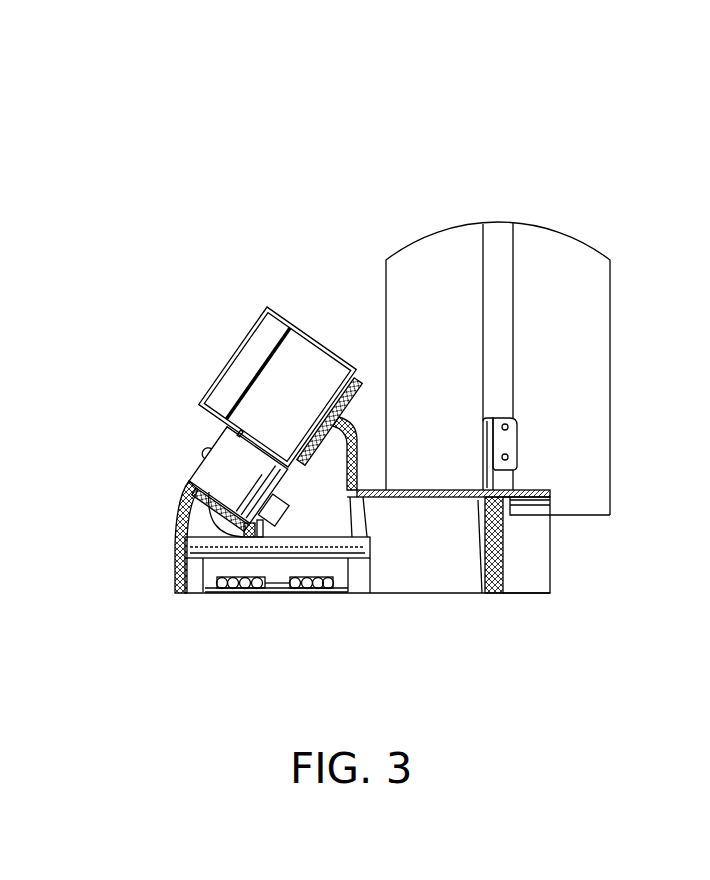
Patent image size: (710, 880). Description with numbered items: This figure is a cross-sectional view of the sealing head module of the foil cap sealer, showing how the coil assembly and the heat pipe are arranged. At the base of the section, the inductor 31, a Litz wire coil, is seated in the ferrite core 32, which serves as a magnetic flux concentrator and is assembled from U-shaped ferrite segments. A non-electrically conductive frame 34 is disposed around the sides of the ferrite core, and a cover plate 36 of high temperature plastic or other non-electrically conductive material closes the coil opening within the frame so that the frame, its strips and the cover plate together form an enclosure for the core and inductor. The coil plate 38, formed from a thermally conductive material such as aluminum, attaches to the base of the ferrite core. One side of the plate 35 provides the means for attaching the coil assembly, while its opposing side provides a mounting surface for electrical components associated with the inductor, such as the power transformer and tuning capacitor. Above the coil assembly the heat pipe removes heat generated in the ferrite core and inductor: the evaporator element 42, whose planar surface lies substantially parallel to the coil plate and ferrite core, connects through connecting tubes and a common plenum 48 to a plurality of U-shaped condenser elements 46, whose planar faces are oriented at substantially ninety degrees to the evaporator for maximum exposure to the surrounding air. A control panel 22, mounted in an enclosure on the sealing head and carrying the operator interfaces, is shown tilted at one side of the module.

The control panel 22 is at (235, 352).
The condenser element 46 is at (410, 255).
The common plenum 48 is at (497, 242).
The plate 35 is at (180, 543).
The evaporator element 42 is at (178, 552).
The coil plate 38 is at (178, 560).
The non-electrically conductive frame 34 is at (193, 575).
The inductor 31 is at (245, 588).
The ferrite core 32 is at (275, 570).
The cover plate 36 is at (315, 590).